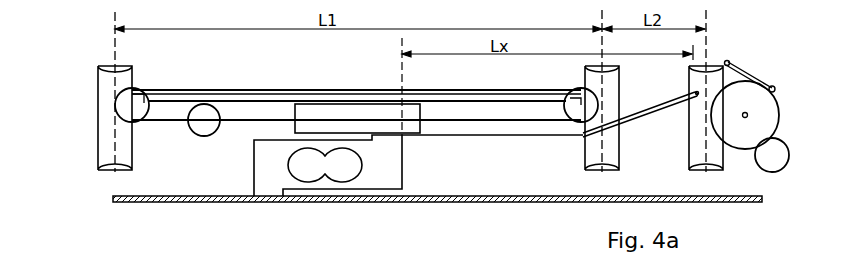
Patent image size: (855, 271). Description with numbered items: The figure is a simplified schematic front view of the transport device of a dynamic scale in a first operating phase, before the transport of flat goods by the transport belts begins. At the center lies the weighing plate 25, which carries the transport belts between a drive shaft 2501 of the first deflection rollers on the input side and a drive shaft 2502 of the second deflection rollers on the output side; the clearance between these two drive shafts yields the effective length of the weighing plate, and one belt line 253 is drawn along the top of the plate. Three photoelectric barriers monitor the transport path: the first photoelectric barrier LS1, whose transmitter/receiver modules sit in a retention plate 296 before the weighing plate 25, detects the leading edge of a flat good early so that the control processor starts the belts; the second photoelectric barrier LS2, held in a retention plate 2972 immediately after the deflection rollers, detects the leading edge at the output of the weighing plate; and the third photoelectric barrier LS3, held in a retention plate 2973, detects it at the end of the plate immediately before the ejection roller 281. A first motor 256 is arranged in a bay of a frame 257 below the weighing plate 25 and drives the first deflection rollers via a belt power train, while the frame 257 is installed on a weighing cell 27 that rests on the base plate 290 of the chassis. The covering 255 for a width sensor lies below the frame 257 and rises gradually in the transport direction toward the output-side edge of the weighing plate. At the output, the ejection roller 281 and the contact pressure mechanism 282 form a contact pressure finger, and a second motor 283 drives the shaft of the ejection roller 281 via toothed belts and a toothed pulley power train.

The weighing plate 25 is at (218, 88).
The weighing cell 27 is at (392, 172).
The belt upper run / sheet support 253 is at (253, 88).
The covering for a width sensor 255 is at (633, 118).
The first motor 256 is at (217, 134).
The frame 257 is at (338, 115).
The ejection roller 281 is at (765, 115).
The contact pressure mechanism 282 is at (748, 70).
The second motor 283 is at (777, 163).
The base plate 290 is at (122, 194).
The retention plate 296 is at (97, 139).
The drive shaft of the first deflection rollers 2501 is at (133, 105).
The drive shaft of the second deflection rollers 2502 is at (565, 110).
The retention plate 2972 is at (584, 157).
The retention plate 2973 is at (686, 157).
The first photoelectric barrier LS1 is at (112, 88).
The second photoelectric barrier LS2 is at (598, 90).
The third photoelectric barrier LS3 is at (700, 90).